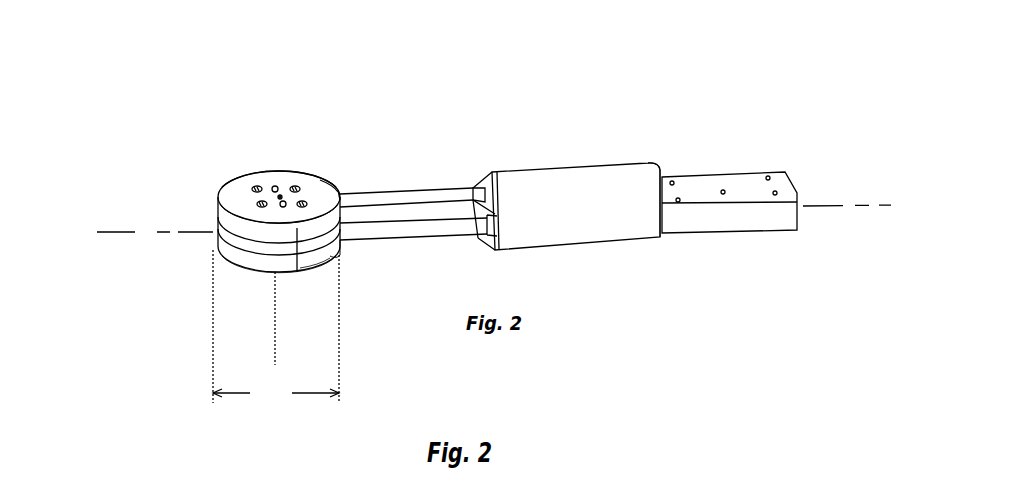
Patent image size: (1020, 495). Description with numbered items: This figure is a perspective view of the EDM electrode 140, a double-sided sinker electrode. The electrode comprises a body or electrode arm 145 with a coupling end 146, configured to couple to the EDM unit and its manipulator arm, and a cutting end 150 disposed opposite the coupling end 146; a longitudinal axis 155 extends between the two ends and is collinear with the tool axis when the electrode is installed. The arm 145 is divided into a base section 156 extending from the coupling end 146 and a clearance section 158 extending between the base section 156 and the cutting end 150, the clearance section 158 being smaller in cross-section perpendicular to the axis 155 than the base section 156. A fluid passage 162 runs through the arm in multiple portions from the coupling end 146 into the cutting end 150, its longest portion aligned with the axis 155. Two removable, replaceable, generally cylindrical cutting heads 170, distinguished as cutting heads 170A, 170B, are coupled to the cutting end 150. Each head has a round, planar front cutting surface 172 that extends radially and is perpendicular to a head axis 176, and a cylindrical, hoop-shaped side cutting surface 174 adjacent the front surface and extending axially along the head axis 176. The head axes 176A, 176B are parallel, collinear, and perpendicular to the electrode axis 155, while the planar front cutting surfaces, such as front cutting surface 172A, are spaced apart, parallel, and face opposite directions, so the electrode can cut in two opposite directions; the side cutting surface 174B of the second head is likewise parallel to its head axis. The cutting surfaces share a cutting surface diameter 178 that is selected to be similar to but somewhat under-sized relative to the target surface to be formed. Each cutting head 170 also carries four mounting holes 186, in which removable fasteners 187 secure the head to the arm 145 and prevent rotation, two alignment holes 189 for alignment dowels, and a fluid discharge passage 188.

The EDM electrode 140 is at (242, 177).
The electrode arm 145 is at (645, 168).
The coupling end 146 is at (737, 178).
The cutting end 150 is at (245, 243).
The longitudinal axis 155 is at (148, 197).
The base section 156 is at (553, 177).
The clearance section 158 is at (392, 192).
The fluid passage 162 is at (723, 192).
The cutting head 170 is at (227, 187).
The first cutting head 170A is at (232, 152).
The second cutting head 170B is at (250, 263).
The front cutting surface 172 is at (317, 188).
The first front cutting surface 172A is at (385, 220).
The side cutting surface 174 is at (342, 252).
The second side cutting surface 174B is at (398, 287).
The head axis 176 is at (283, 192).
The first head axis 176A is at (339, 130).
The second head axis 176B is at (277, 350).
The cutting surface diameter 178 is at (276, 330).
The mounting hole 186 is at (252, 190).
The removable fastener 187 is at (293, 187).
The fluid discharge passage 188 is at (335, 197).
The alignment hole 189 is at (275, 187).